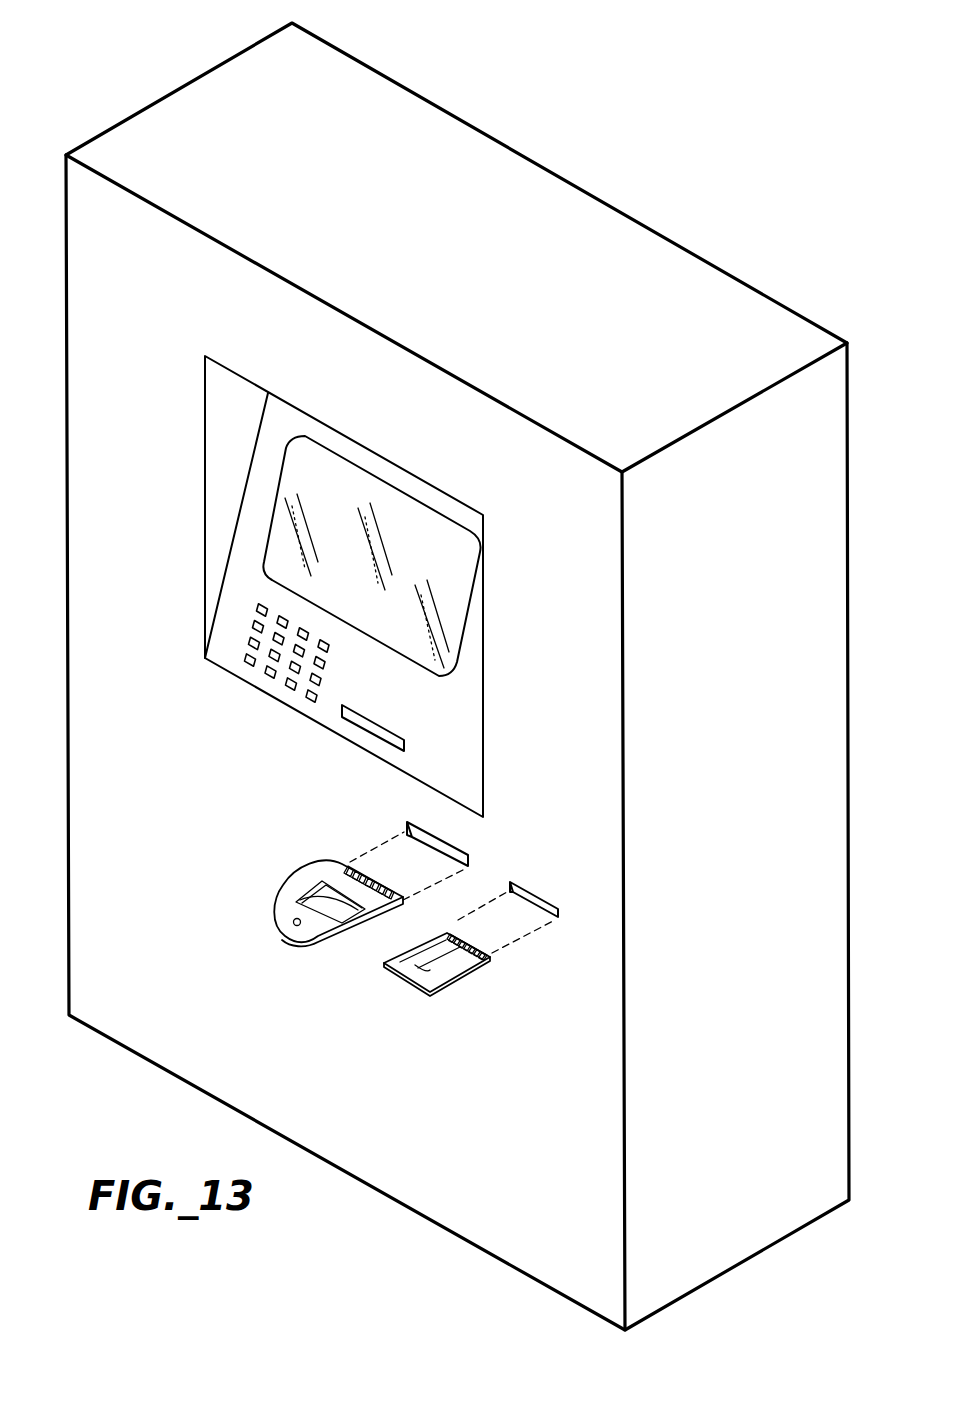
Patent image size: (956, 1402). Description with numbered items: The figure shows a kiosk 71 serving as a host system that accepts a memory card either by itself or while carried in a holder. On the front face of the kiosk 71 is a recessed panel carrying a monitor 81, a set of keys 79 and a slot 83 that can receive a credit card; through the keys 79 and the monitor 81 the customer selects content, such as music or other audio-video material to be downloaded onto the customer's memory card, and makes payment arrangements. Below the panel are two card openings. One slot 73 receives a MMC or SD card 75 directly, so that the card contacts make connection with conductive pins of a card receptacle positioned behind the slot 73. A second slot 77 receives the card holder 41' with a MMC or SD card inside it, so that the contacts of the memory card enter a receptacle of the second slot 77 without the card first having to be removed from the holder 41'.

The kiosk 71 is at (483, 1216).
The monitor 81 is at (392, 517).
The keys 79 is at (255, 672).
The slot 83 is at (377, 730).
The second slot 77 is at (462, 847).
The slot 73 is at (528, 890).
The card holder 41' is at (338, 924).
The SD card 75 is at (428, 967).